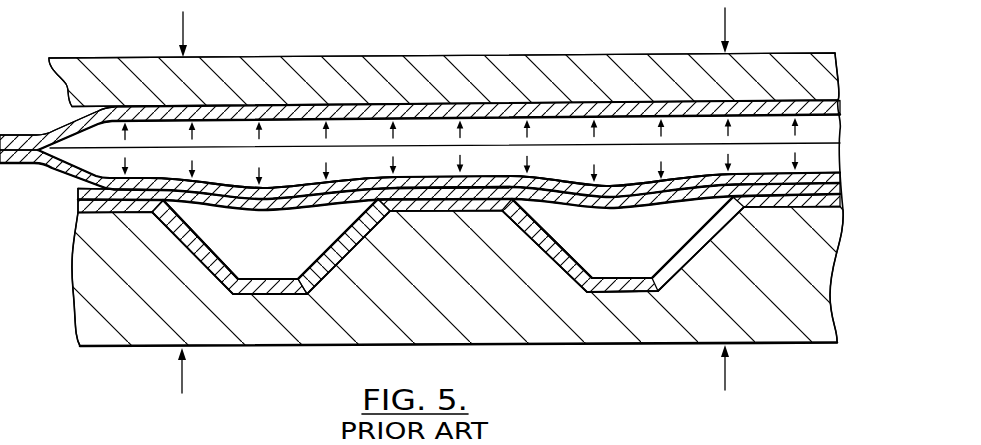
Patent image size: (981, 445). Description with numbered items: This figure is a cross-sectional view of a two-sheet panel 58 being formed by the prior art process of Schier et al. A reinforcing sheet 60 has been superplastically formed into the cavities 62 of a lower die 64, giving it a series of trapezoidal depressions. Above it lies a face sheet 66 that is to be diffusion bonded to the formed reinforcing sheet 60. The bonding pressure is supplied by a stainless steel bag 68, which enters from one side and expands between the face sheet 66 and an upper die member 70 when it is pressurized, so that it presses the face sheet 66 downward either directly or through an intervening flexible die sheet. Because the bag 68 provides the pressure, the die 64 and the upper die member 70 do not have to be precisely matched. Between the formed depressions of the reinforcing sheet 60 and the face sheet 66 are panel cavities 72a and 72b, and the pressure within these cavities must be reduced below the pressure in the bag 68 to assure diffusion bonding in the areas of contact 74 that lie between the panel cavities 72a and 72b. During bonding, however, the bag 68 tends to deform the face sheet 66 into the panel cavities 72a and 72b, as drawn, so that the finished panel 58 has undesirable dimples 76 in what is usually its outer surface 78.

The panel 58 is at (268, 294).
The reinforcing sheet 60 is at (841, 203).
The cavities 62 is at (687, 232).
The die 64 is at (810, 290).
The face sheet 66 is at (840, 189).
The stainless steel bag 68 is at (71, 121).
The upper die member 70 is at (838, 80).
The panel cavity 72a is at (270, 239).
The panel cavity 72b is at (622, 237).
The areas of contact 74 is at (136, 203).
The dimples 76 is at (303, 184).
The outer surface 78 is at (468, 187).